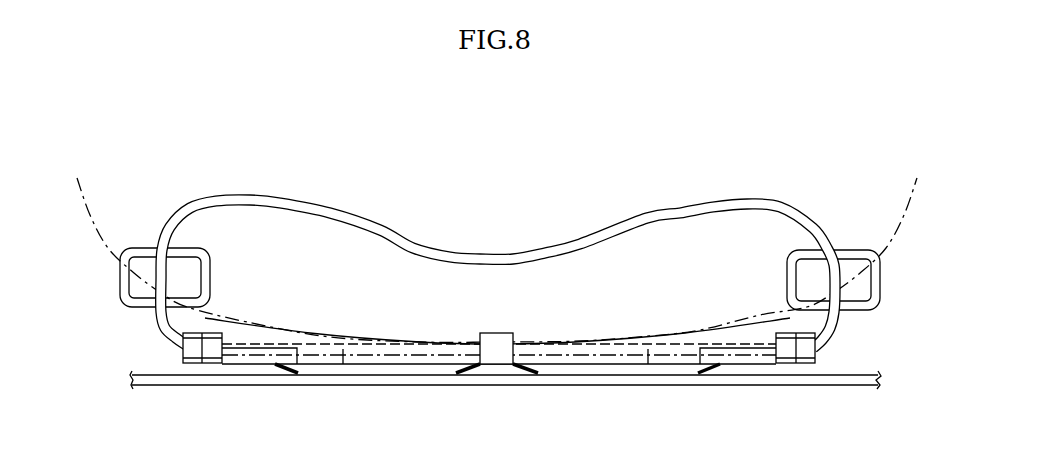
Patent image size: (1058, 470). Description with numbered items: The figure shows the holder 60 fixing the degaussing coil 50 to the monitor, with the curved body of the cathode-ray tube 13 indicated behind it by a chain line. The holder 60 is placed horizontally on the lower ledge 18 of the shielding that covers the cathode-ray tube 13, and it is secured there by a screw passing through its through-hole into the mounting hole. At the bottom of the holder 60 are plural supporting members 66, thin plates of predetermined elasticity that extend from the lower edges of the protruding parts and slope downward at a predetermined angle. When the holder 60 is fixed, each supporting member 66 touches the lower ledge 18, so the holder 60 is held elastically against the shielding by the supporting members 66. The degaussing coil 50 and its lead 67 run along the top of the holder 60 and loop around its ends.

The cathode-ray tube 13 is at (909, 202).
The lower ledge 18 is at (834, 379).
The strap 50 is at (756, 206).
The holder 60 is at (172, 361).
The supporting member 66 is at (524, 368).
The cord 67 is at (273, 334).